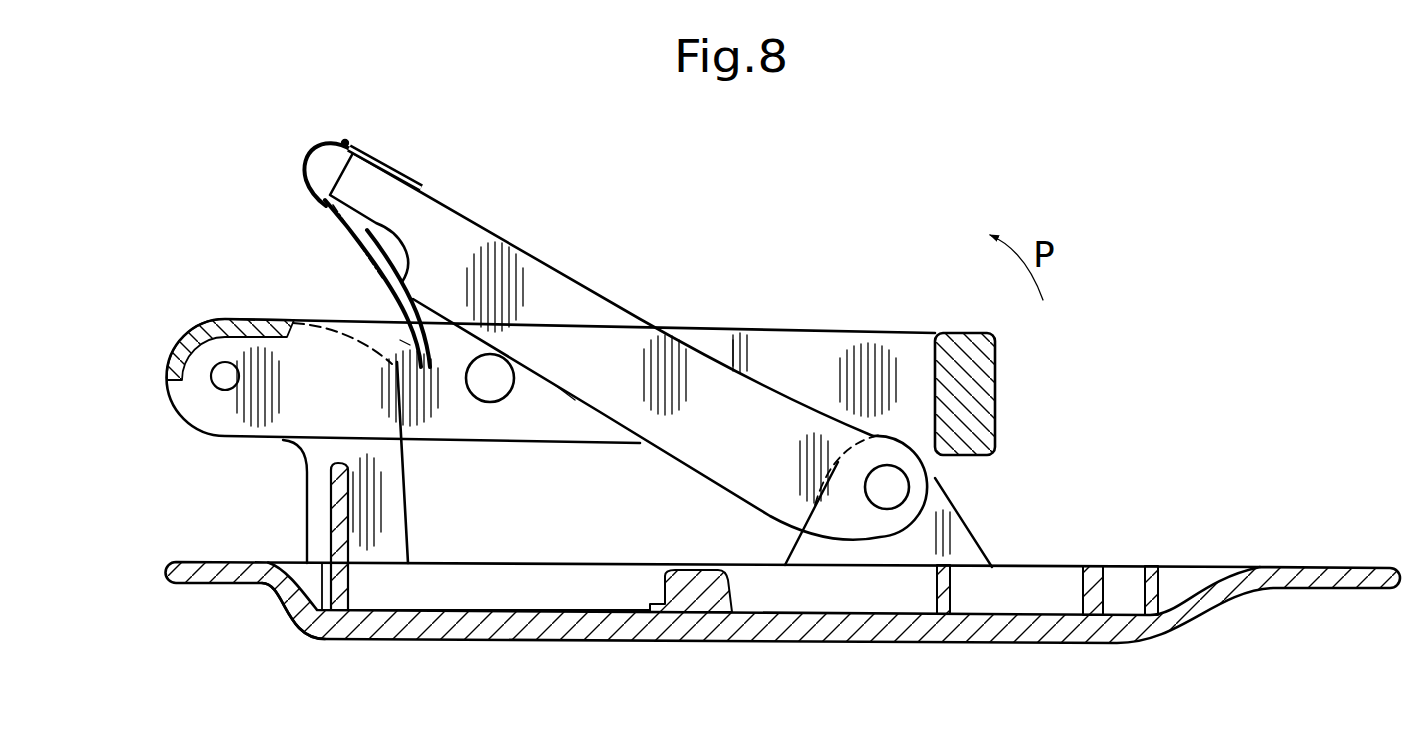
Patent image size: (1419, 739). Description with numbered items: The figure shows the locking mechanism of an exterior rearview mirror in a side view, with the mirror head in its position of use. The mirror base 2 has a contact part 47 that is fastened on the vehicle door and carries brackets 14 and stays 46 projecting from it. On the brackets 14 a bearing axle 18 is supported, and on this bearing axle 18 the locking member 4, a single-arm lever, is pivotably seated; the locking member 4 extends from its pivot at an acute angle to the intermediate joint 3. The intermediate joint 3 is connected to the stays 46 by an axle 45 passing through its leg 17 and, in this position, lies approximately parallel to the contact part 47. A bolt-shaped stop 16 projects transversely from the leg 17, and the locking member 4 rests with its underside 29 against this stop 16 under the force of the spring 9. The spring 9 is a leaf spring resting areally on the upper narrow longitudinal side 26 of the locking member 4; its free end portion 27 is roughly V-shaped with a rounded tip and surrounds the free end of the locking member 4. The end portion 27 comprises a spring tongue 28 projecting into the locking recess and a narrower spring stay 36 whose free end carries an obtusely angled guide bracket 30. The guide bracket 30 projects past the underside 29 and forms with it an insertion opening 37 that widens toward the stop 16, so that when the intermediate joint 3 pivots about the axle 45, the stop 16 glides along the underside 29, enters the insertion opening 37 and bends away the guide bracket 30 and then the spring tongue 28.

The mirror base 2 is at (679, 646).
The intermediate joint 3 is at (911, 328).
The locking member 4 is at (568, 271).
The spring 9 is at (345, 139).
The brackets 14 is at (826, 548).
The stop 16 is at (487, 385).
The leg 17 is at (747, 368).
The bearing axle 18 is at (890, 487).
The upper narrow longitudinal side 26 is at (450, 207).
The free end portion 27 is at (317, 146).
The spring tongue 28 is at (363, 242).
The underside 29 is at (563, 397).
The guide bracket 30 is at (410, 343).
The spring stay 36 is at (332, 212).
The insertion opening 37 is at (278, 598).
The axle 45 is at (211, 377).
The stays 46 is at (317, 490).
The contact part 47 is at (597, 593).